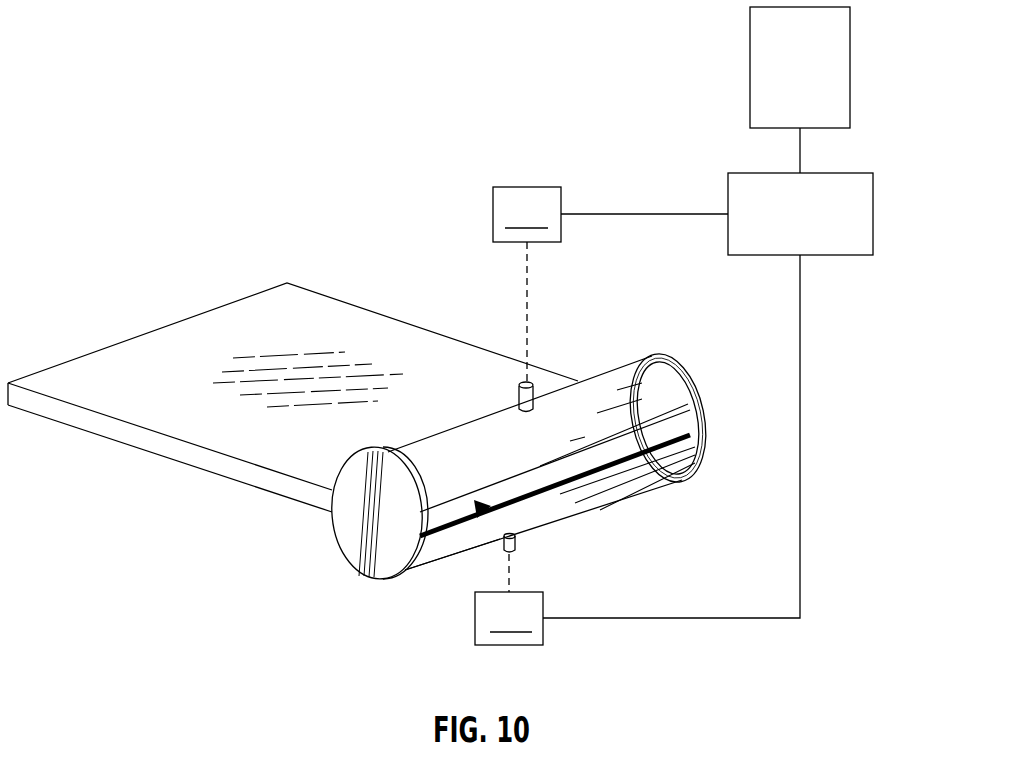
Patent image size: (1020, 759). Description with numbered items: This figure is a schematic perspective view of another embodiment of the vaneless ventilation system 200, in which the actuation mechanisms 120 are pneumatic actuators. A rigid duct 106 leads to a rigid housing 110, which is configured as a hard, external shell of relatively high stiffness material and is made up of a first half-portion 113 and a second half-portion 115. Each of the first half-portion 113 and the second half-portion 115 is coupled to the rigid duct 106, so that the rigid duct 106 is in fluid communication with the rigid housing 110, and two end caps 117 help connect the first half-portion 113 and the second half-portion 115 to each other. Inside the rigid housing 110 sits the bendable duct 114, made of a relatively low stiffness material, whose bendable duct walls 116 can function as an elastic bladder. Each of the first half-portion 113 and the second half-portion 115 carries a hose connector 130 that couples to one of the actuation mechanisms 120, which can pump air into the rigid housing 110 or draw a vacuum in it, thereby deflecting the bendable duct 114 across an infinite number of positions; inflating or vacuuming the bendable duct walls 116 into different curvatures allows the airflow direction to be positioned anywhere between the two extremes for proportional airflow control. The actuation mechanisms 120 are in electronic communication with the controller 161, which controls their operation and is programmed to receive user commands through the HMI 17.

The vaneless ventilation system 200 is at (136, 126).
The rigid duct 106 is at (243, 323).
The rigid housing 110 is at (662, 386).
The first half-portion 113 is at (633, 358).
The bendable duct 114 is at (470, 530).
The second half-portion 115 is at (426, 563).
The bendable duct walls 116 is at (622, 452).
The end caps 117 is at (355, 528).
The actuation mechanisms 120 is at (637, 416).
The hose connector 130 is at (537, 395).
The controller 161 is at (830, 173).
The HMI 17 is at (852, 68).